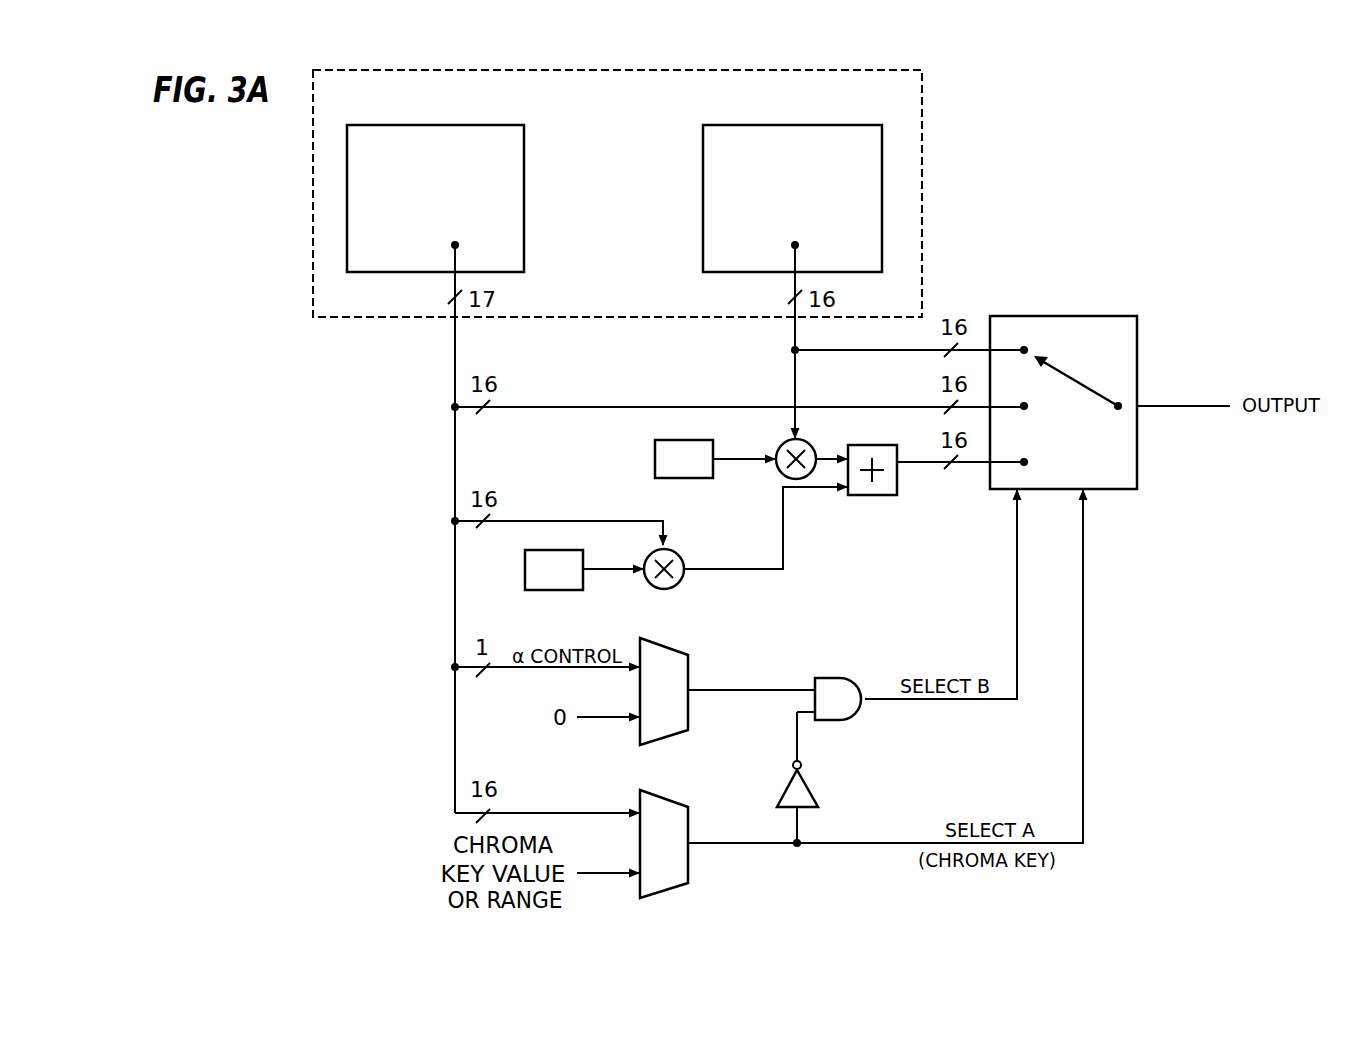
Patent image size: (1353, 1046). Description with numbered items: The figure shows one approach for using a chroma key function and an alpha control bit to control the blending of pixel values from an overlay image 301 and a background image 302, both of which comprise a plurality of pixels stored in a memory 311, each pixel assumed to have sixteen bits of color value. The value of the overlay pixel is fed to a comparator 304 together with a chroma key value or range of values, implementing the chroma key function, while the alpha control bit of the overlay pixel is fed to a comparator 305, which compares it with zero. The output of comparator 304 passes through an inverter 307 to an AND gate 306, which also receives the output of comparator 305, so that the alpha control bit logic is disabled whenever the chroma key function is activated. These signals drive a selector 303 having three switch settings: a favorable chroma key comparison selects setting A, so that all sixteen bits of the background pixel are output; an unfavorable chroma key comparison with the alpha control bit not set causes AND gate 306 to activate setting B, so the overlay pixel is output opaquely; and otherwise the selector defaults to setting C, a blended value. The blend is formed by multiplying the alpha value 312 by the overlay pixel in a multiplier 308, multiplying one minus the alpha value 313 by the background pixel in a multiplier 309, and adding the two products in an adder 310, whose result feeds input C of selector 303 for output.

The overlay image 301 is at (492, 125).
The background image 302 is at (845, 125).
The memory 311 is at (922, 112).
The selector 303 is at (1110, 316).
The one minus the alpha value 313 is at (712, 440).
The multiplier 309 is at (808, 443).
The adder 310 is at (886, 495).
The alpha value 312 is at (582, 550).
The multiplier 308 is at (678, 554).
The comparator 305 is at (690, 672).
The AND gate 306 is at (840, 678).
The inverter 307 is at (810, 785).
The comparator 304 is at (690, 825).